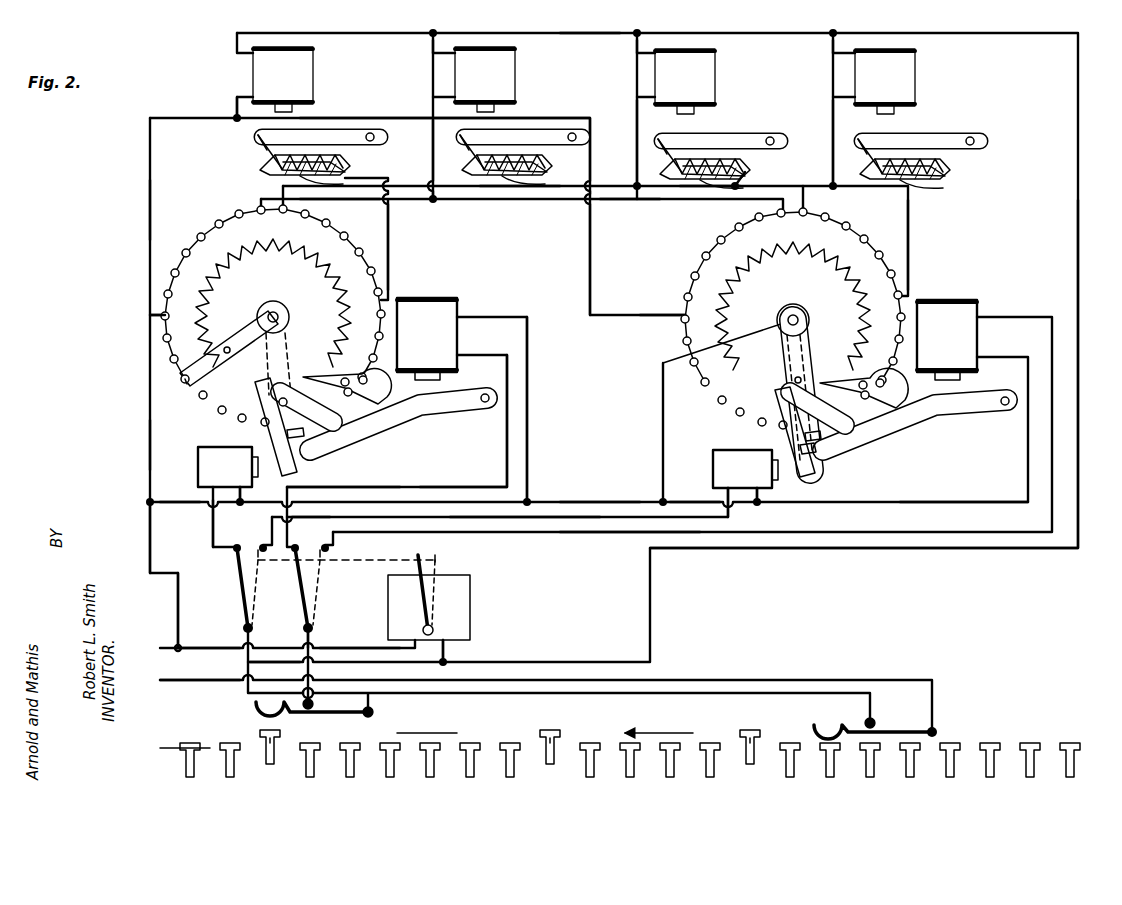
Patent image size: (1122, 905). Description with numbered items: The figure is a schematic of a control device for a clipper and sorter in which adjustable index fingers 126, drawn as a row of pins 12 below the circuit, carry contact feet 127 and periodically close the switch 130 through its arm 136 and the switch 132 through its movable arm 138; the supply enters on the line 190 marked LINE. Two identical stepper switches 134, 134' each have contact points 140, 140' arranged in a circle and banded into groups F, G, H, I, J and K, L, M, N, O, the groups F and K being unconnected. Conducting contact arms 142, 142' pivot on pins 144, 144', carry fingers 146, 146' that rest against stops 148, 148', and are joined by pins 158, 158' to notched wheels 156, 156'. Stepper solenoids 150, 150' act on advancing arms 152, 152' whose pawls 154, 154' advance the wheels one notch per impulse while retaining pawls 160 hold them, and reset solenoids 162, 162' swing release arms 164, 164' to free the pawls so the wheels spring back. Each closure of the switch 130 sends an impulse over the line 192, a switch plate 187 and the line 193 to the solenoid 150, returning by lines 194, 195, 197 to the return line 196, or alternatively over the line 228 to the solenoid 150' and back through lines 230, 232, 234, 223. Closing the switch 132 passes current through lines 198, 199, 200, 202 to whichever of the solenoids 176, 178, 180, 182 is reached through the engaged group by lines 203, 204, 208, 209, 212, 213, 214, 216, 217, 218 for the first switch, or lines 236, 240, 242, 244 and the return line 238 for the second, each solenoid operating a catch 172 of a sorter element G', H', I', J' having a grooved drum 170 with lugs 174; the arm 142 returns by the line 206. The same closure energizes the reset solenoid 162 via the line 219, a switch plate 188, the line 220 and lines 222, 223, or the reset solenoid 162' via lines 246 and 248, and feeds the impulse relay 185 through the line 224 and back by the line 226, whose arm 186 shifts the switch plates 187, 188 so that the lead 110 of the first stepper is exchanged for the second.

The contact pins 12 is at (1100, 770).
The wiper lead 110 is at (342, 200).
The adjustable index finger 126 is at (987, 760).
The contact member or foot 127 is at (1028, 748).
The switch 130 is at (862, 720).
The switch 132 is at (262, 703).
The stepper switch 134 is at (135, 328).
The stepper switch 134' is at (651, 328).
The arm 136 is at (848, 738).
The movable arm 138 is at (290, 714).
The contact points 140 is at (273, 315).
The contact points 140' is at (793, 318).
The contact arm 142 is at (263, 364).
The contact arm 142' is at (819, 394).
The pin 144 is at (291, 309).
The pin 144' is at (814, 378).
The finger 146 is at (170, 394).
The finger 146' is at (790, 433).
The stop 148 is at (272, 435).
The stop 148' is at (832, 457).
The stepper solenoid 150 is at (212, 467).
The stepper solenoid 150' is at (726, 469).
The advancing arm 152 is at (297, 427).
The advancing arm 152' is at (810, 443).
The pawl 154 is at (322, 407).
The pawl 154' is at (836, 408).
The notched wheel 156 is at (273, 292).
The notched wheel 156' is at (793, 294).
The pin 158 is at (243, 339).
The pin 158' is at (772, 362).
The retaining pawl 160 is at (367, 386).
The reset solenoid 162 is at (427, 327).
The reset solenoid 162' is at (951, 327).
The release arm 164 is at (399, 422).
The release arm 164' is at (916, 423).
The grooved drum 170 is at (942, 186).
The catch 172 is at (256, 140).
The lugs 174 is at (340, 158).
The solenoid 176 is at (252, 72).
The solenoid 178 is at (455, 74).
The solenoid 180 is at (655, 77).
The solenoid 182 is at (856, 77).
The impulse relay 185 is at (458, 576).
The arm 186 is at (422, 560).
The switch plate 187 is at (243, 583).
The switch plate 188 is at (305, 588).
The line 190 is at (205, 680).
The line 192 is at (243, 662).
The line 193 is at (213, 523).
The line 194 is at (240, 496).
The line 195 is at (186, 502).
The return line 196 is at (170, 633).
The line 197 is at (150, 522).
The line 198 is at (374, 712).
The line 199 is at (314, 704).
The line 200 is at (1078, 238).
The line 202 is at (600, 33).
The line 203 is at (237, 104).
The line 204 is at (150, 210).
The line 206 is at (150, 434).
The line 208 is at (433, 50).
The line 209 is at (433, 150).
The line 212 is at (637, 50).
The line 213 is at (637, 130).
The line 214 is at (535, 186).
The line 216 is at (833, 50).
The line 217 is at (833, 130).
The line 218 is at (476, 199).
The line 219 is at (310, 645).
The line 220 is at (396, 493).
The line 222 is at (527, 370).
The line 223 is at (445, 493).
The line 224 is at (443, 655).
The line 226 is at (232, 648).
The line 228 is at (530, 517).
The line 230 is at (758, 492).
The line 232 is at (706, 502).
The line 234 is at (613, 502).
The line 236 is at (365, 118).
The line 238 is at (738, 320).
The line 240 is at (636, 199).
The line 242 is at (708, 186).
The line 244 is at (908, 238).
The line 246 is at (625, 532).
The line 248 is at (968, 503).
The contact point group G is at (164, 368).
The contact point group H is at (196, 210).
The contact point group I is at (361, 236).
The contact point group J is at (380, 376).
The contact point group F is at (232, 424).
The contact point group K is at (745, 428).
The contact point group L is at (688, 370).
The contact point group M is at (710, 236).
The contact point group N is at (860, 222).
The contact point group O is at (895, 372).
The sorting mechanism element G' is at (324, 103).
The sorting mechanism element H' is at (538, 105).
The sorting mechanism element I' is at (734, 115).
The sorting mechanism element J' is at (934, 119).
The line LINE is at (157, 660).